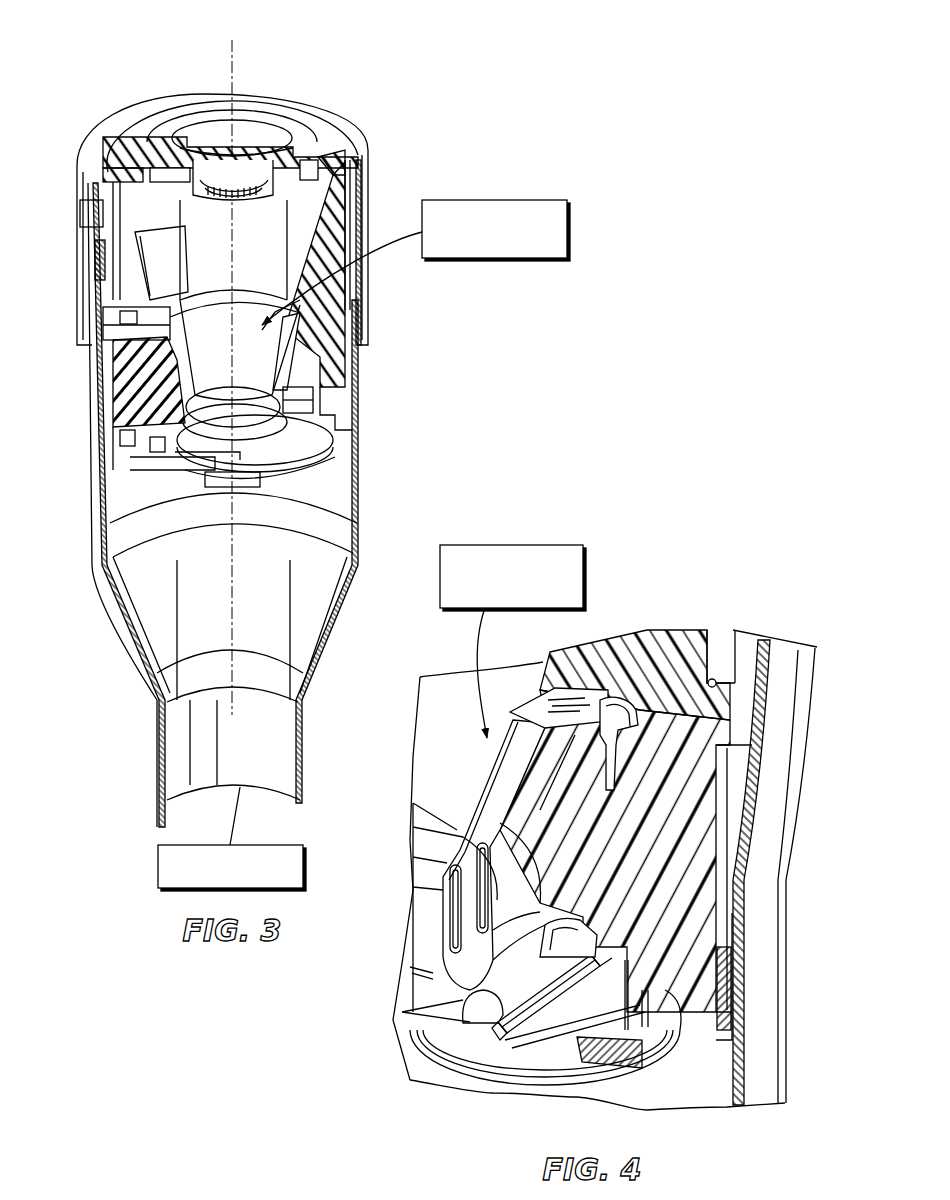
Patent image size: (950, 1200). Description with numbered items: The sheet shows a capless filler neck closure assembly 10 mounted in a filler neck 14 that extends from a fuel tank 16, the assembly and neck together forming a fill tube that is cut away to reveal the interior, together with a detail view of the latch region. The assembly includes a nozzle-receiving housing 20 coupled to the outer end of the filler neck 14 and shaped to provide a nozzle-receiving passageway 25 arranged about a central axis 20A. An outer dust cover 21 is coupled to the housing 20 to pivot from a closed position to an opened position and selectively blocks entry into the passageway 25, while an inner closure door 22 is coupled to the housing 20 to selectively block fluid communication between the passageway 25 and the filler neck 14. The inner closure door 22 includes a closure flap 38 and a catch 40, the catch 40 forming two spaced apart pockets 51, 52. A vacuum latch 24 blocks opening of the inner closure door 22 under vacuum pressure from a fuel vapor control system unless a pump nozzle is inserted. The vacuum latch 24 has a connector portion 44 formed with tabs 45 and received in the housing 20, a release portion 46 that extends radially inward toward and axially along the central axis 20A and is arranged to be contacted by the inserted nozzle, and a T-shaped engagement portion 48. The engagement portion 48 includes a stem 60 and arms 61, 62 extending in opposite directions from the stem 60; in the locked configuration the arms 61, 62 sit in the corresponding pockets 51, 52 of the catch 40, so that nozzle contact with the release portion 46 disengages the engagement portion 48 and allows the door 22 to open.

In FIG. 3, the filler neck closure assembly 10 is at (398, 72).
In FIG. 3, the filler neck 14 is at (372, 562).
In FIG. 4, the filler neck 14 is at (790, 972).
In FIG. 3, the fuel tank 16 is at (303, 862).
In FIG. 3, the nozzle-receiving housing 20 is at (385, 155).
In FIG. 4, the nozzle-receiving housing 20 is at (733, 777).
In FIG. 3, the central axis 20A is at (110, 413).
In FIG. 3, the outer dust cover 21 is at (242, 128).
In FIG. 4, the inner closure door 22 is at (392, 1030).
In FIG. 3, the vacuum latch 24 is at (520, 200).
In FIG. 4, the vacuum latch 24 is at (555, 545).
In FIG. 3, the nozzle-receiving passageway 25 is at (118, 298).
In FIG. 3, the closure flap 38 is at (272, 503).
In FIG. 4, the closure flap 38 is at (415, 968).
In FIG. 3, the catch 40 is at (318, 452).
In FIG. 4, the catch 40 is at (445, 1022).
In FIG. 3, the connector portion 44 is at (300, 302).
In FIG. 4, the connector portion 44 is at (582, 692).
In FIG. 4, the tabs 45 is at (633, 760).
In FIG. 3, the release portion 46 is at (262, 364).
In FIG. 4, the release portion 46 is at (468, 786).
In FIG. 3, the engagement portion 48 is at (305, 397).
In FIG. 4, the engagement portion 48 is at (522, 1030).
In FIG. 4, the pocket 51 is at (492, 1060).
In FIG. 4, the pocket 52 is at (658, 1035).
In FIG. 4, the stem 60 is at (440, 986).
In FIG. 4, the arm 61 is at (498, 1040).
In FIG. 4, the arm 62 is at (577, 984).